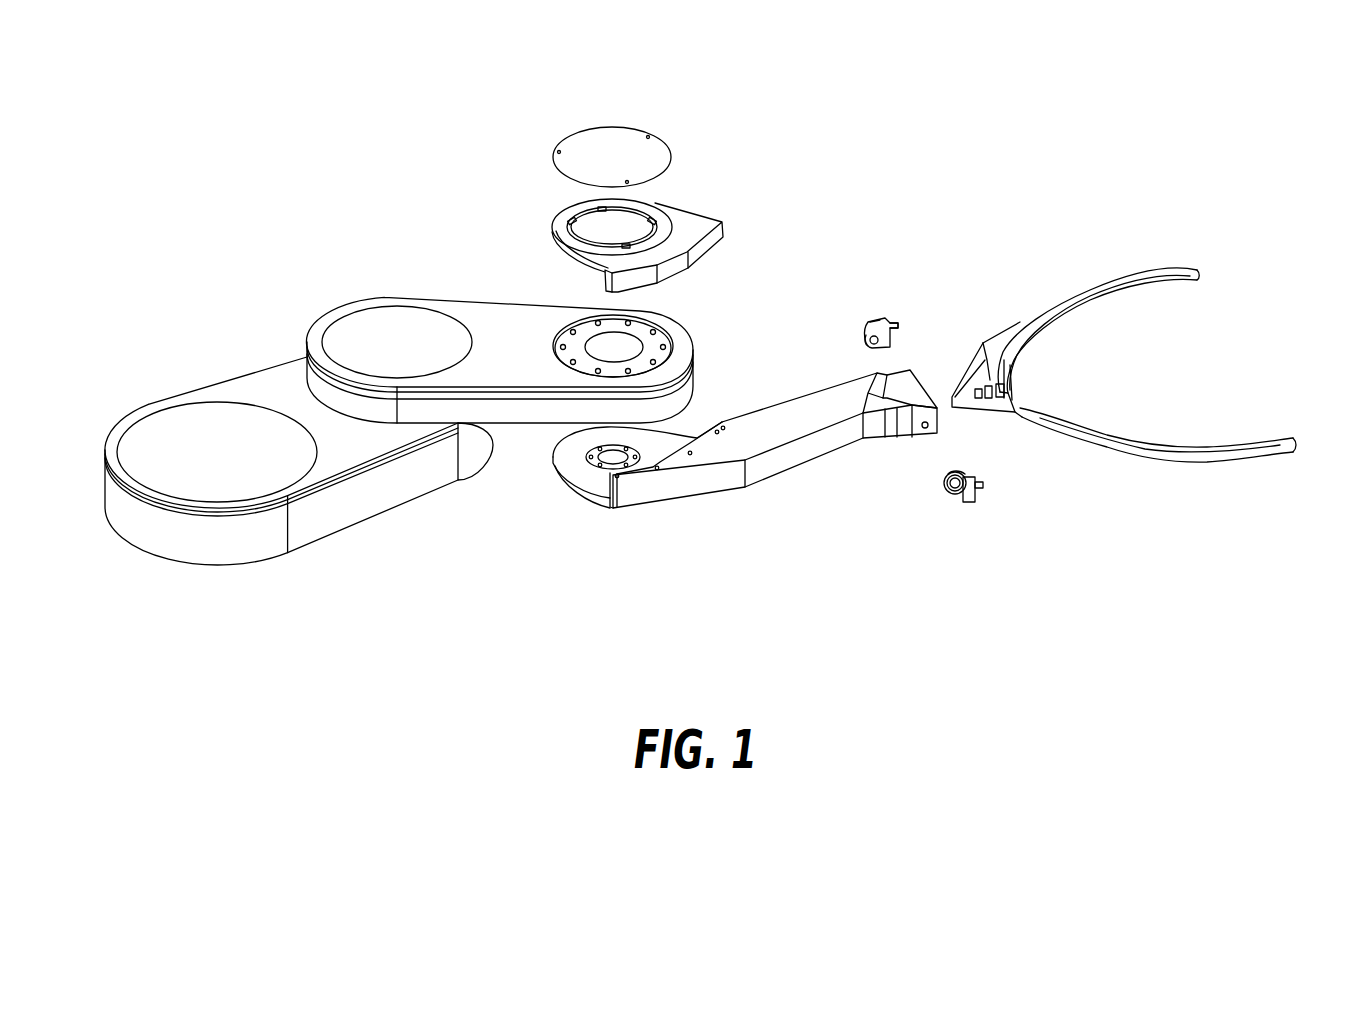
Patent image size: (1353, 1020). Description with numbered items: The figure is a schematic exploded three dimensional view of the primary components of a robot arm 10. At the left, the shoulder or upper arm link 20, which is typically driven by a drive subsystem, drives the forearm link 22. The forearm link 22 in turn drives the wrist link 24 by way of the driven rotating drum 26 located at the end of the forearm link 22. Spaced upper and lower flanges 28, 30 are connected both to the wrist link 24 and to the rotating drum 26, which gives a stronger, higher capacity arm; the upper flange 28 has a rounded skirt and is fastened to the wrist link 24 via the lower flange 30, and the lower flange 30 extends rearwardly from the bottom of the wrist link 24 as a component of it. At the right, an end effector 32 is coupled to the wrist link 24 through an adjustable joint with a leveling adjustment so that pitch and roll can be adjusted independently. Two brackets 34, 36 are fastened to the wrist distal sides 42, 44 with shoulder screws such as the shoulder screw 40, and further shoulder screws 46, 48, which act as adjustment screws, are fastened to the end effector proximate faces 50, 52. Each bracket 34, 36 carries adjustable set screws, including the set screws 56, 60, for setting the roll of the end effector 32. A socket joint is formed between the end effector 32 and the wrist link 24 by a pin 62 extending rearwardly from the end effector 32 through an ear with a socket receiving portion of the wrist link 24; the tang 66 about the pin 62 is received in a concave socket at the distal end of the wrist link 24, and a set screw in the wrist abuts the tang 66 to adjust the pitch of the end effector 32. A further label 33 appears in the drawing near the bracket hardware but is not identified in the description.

The robot arm 10 is at (1013, 150).
The shoulder or upper arm link 20 is at (228, 392).
The forearm link 22 is at (475, 313).
The wrist link 24 is at (757, 483).
The driven rotating drum 26 is at (667, 337).
The upper flange 28 is at (683, 207).
The lower flange 30 is at (570, 483).
The end effector 32 is at (1158, 267).
The fastener 33 is at (955, 493).
The bracket 34 is at (968, 500).
The bracket 36 is at (880, 318).
The shoulder screw 40 is at (867, 343).
The wrist distal side 42 is at (910, 437).
The wrist distal side 44 is at (907, 368).
The shoulder screw 46 is at (987, 485).
The shoulder screw 48 is at (897, 325).
The end effector proximate face 50 is at (1025, 427).
The end effector proximate face 52 is at (983, 340).
The set screw 56 is at (960, 473).
The set screw 60 is at (875, 320).
The pin 62 is at (1007, 373).
The tang 66 is at (977, 372).